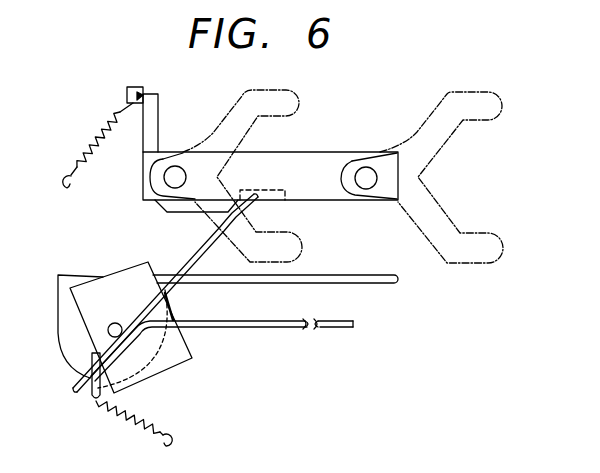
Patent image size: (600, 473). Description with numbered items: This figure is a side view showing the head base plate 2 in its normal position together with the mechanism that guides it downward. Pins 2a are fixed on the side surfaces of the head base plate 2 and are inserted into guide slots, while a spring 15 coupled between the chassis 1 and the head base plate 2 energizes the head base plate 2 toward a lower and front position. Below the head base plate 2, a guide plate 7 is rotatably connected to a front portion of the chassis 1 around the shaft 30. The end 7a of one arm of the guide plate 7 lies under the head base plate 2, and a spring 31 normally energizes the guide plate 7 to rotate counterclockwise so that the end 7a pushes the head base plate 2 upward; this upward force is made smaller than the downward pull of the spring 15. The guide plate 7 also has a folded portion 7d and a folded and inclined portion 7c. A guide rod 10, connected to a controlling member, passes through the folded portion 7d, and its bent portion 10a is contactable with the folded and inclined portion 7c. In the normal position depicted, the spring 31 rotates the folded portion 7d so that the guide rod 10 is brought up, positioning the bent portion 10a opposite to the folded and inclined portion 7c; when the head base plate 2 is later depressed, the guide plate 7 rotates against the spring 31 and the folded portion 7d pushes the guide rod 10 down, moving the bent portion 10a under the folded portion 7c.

The chassis 1 is at (379, 284).
The head base plate 2 is at (325, 160).
The pins 2a is at (175, 166).
The guide plate 7 is at (112, 272).
The end of one arm of the guide plate 7a is at (255, 197).
The folded and inclined portion 7c is at (92, 363).
The folded portion 7d is at (193, 354).
The guide rod 10 is at (134, 335).
The bent portion of the guide rod 10a is at (90, 394).
The spring 15 is at (88, 147).
The shaft 30 is at (121, 323).
The spring 31 is at (129, 423).